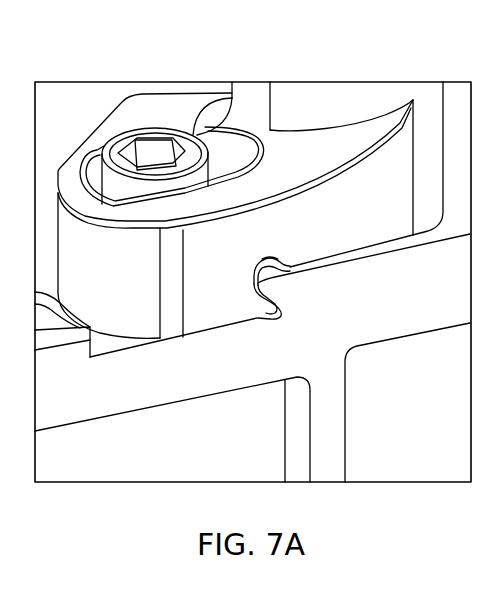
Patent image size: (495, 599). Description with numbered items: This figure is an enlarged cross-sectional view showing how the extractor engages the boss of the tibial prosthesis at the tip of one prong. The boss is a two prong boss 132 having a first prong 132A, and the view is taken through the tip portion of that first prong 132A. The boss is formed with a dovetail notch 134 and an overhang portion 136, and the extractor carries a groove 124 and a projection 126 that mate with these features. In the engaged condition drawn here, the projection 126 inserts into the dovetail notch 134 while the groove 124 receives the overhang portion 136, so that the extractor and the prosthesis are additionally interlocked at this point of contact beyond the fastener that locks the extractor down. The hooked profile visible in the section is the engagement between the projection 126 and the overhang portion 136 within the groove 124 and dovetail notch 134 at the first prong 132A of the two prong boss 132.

The groove 124 is at (190, 161).
The overhang portion 136 is at (272, 270).
The two prong boss 132 is at (337, 148).
The first prong 132A is at (275, 255).
The projection 126 is at (241, 362).
The dovetail notch 134 is at (267, 308).